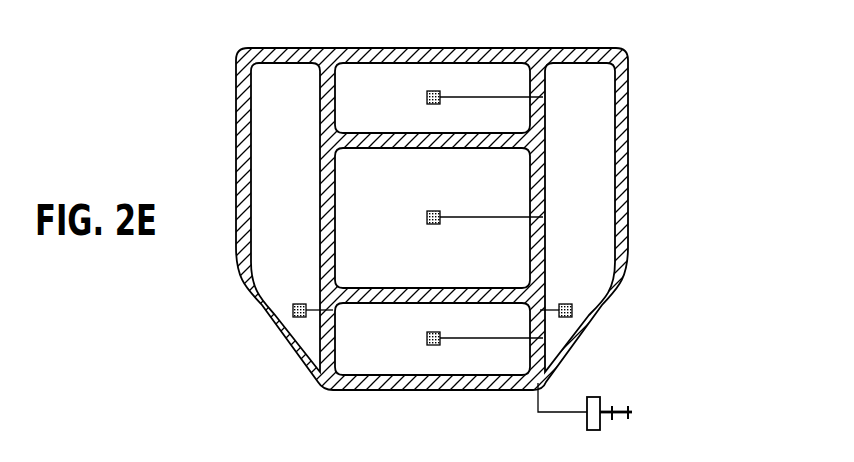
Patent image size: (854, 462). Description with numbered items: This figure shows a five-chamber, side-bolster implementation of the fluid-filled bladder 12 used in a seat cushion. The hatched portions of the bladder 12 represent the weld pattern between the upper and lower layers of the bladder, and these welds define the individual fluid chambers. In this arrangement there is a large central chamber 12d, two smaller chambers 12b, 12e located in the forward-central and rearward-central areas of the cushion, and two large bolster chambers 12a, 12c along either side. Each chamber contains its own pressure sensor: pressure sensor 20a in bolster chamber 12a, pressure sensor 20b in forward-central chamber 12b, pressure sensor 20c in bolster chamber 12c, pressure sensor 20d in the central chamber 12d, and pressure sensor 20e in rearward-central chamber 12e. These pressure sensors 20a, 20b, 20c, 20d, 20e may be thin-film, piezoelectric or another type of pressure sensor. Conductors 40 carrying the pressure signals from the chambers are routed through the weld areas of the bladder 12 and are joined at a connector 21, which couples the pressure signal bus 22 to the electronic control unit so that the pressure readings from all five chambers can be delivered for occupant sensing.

The fluid-filled bladder 12 is at (716, 250).
The bolster chamber 12a is at (600, 92).
The forward-central chamber 12b is at (433, 75).
The bolster chamber 12c is at (266, 90).
The central chamber 12d is at (510, 177).
The rearward-central chamber 12e is at (421, 358).
The pressure sensor 20a is at (565, 304).
The pressure sensor 20b is at (427, 97).
The pressure sensor 20c is at (299, 304).
The pressure sensor 20d is at (427, 217).
The pressure sensor 20e is at (427, 338).
The connector 21 is at (593, 438).
The pressure signal bus 22 is at (610, 410).
The conductors 40 is at (537, 408).